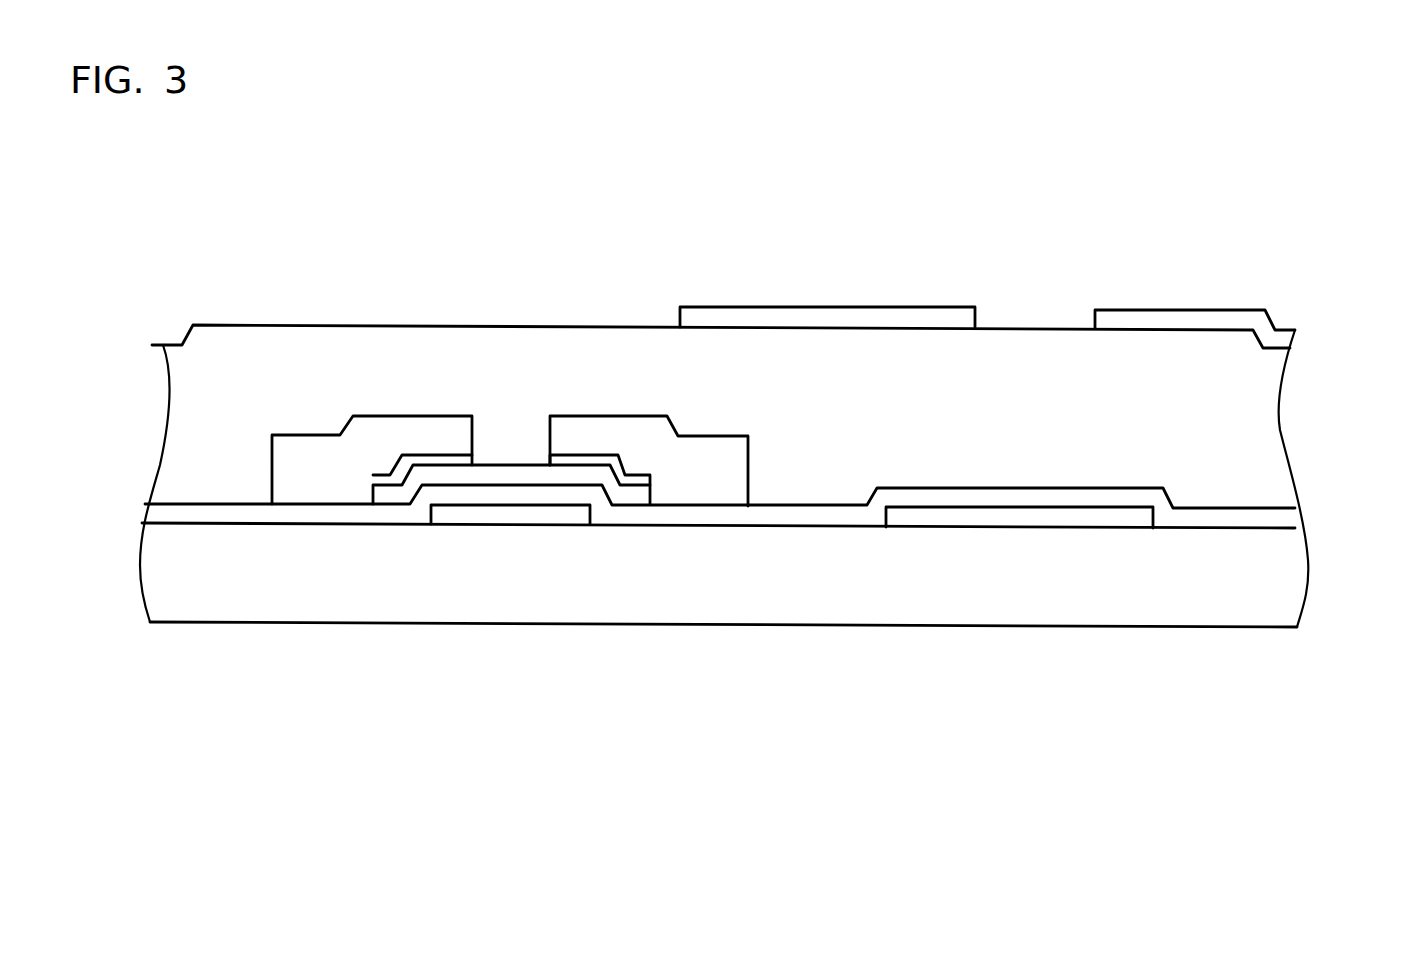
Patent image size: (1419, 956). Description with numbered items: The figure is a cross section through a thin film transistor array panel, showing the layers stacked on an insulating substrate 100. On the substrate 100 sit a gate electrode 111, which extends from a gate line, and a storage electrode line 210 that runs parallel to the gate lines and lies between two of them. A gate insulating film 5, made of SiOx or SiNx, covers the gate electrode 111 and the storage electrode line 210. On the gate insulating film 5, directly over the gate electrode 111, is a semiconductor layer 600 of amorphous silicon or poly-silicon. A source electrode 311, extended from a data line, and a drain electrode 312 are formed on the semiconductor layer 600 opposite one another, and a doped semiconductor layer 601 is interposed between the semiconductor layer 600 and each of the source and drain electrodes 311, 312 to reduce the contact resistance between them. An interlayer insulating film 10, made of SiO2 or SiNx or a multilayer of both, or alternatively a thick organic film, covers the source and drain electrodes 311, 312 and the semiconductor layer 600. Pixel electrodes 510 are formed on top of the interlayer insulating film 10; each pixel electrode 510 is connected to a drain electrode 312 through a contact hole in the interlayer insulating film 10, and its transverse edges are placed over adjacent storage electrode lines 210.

The gate insulating film 5 is at (1295, 520).
The interlayer insulating film 10 is at (1272, 423).
The insulating substrate 100 is at (1295, 582).
The gate electrode 111 is at (518, 520).
The storage electrode line 210 is at (1052, 523).
The source electrode 311 is at (423, 420).
The drain electrode 312 is at (582, 420).
The pixel electrode 510 is at (830, 317).
The semiconductor layer 600 is at (388, 492).
The doped semiconductor layer 601 is at (403, 470).